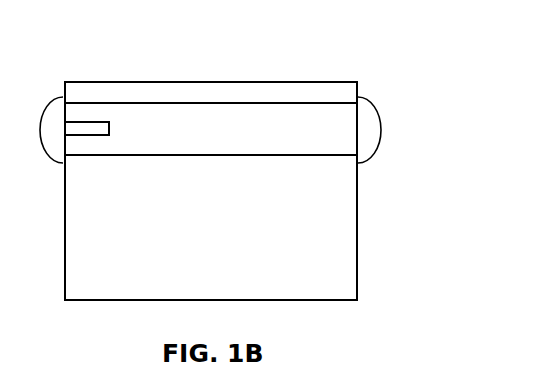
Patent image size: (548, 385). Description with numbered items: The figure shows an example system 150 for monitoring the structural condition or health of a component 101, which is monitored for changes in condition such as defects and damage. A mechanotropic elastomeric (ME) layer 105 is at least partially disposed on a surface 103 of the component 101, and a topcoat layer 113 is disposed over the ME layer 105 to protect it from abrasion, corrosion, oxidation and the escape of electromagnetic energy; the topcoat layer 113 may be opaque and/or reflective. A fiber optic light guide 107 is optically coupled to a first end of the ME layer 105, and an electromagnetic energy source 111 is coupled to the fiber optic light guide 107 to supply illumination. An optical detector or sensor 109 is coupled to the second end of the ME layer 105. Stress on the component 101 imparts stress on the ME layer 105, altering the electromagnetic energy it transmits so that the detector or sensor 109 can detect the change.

The component 101 is at (342, 227).
The surface 103 is at (283, 150).
The mechanotropic elastomeric layer 105 is at (222, 115).
The fiber optic light guide 107 is at (87, 130).
The optical detector or sensor 109 is at (367, 128).
The electromagnetic energy source 111 is at (62, 102).
The topcoat layer 113 is at (163, 94).
The example system 150 is at (337, 27).